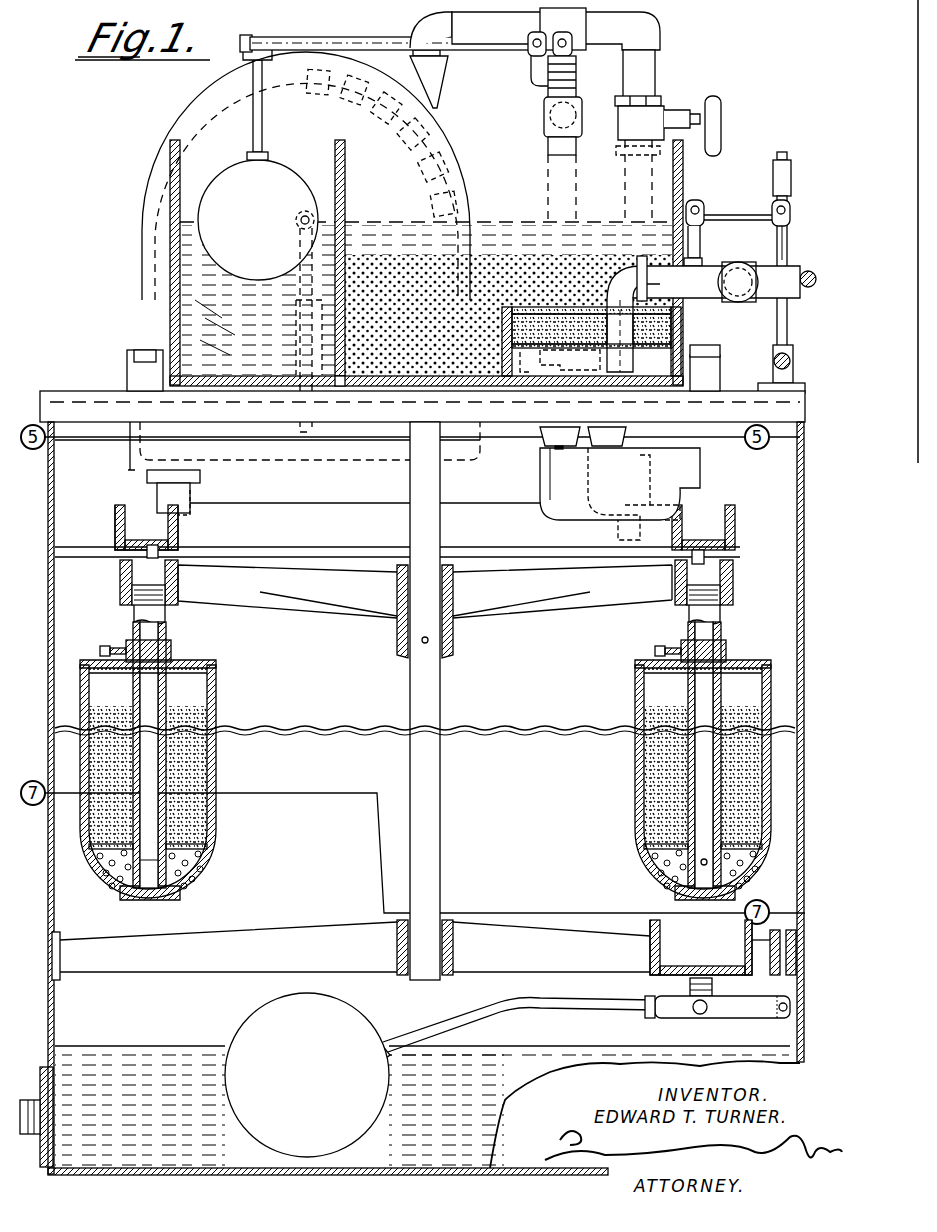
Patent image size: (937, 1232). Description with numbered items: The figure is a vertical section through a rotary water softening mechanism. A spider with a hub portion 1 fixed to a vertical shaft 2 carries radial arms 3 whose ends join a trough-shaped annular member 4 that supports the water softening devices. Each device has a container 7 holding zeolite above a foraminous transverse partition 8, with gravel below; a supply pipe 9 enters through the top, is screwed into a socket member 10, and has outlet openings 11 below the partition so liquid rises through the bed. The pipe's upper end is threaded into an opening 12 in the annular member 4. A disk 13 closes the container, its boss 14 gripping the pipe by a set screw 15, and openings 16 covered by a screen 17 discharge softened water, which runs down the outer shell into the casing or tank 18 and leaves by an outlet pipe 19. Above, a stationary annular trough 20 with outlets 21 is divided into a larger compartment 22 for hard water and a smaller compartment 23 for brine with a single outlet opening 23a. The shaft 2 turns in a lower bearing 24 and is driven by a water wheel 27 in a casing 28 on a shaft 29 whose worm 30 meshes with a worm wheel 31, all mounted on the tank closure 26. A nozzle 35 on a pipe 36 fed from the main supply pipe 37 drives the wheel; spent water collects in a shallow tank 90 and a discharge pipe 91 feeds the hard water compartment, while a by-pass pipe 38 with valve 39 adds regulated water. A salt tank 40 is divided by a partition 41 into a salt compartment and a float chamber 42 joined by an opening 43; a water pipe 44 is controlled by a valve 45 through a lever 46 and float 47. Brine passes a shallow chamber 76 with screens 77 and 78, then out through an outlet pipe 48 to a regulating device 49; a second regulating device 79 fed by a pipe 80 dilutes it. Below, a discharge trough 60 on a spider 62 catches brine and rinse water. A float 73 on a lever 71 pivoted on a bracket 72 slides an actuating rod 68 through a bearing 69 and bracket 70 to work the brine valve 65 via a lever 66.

The hub portion 1 is at (453, 638).
The vertical shaft 2 is at (430, 700).
The radial arms 3 is at (575, 600).
The annular member 4 is at (732, 592).
The container 7 is at (217, 704).
The transverse partition 8 is at (213, 848).
The supply pipe 9 is at (148, 694).
The socket member 10 is at (128, 893).
The outlet openings 11 is at (151, 850).
The opening 12 is at (172, 600).
The disk 13 is at (218, 664).
The boss 14 is at (172, 645).
The set screw 15 is at (108, 648).
The openings 16 is at (195, 664).
The screen 17 is at (218, 675).
The casing or tank 18 is at (55, 1008).
The outlet pipe 19 is at (36, 1118).
The annular trough 20 is at (397, 530).
The outlets 21 is at (148, 545).
The larger compartment 22 is at (134, 512).
The smaller compartment 23 is at (703, 527).
The outlet opening 23a is at (690, 553).
The bearing 24 is at (397, 945).
The closure 26 is at (66, 393).
The water wheel 27 is at (352, 120).
The casing 28 is at (438, 120).
The shaft 29 is at (296, 217).
The worm 30 is at (285, 328).
The worm wheel 31 is at (293, 337).
The nozzle 35 is at (426, 80).
The pipe 36 is at (497, 44).
The main supply pipe 37 is at (796, 272).
The by-pass pipe 38 is at (640, 70).
The valve 39 is at (658, 100).
The tank 40 is at (684, 180).
The partition 41 is at (346, 168).
The float chamber 42 is at (215, 327).
The opening 43 is at (340, 380).
The water pipe 44 is at (548, 148).
The valve 45 is at (576, 88).
The lever 46 is at (336, 43).
The float 47 is at (258, 159).
The outlet pipe 48 is at (634, 360).
The regulating device 49 is at (634, 494).
The discharge trough 60 is at (723, 947).
The spider 62 is at (551, 947).
The valve 65 is at (698, 262).
The lever 66 is at (744, 212).
The actuating rod 68 is at (786, 340).
The bearing 69 is at (778, 380).
The bracket 70 is at (722, 996).
The lever 71 is at (640, 1010).
The bracket 72 is at (693, 988).
The float 73 is at (307, 1075).
The shallow chamber 76 is at (520, 375).
The screen 77 is at (682, 316).
The screen 78 is at (682, 344).
The regulating device 79 is at (620, 484).
The pipe 80 is at (562, 447).
The shallow tank 90 is at (150, 450).
The discharge pipe 91 is at (180, 495).